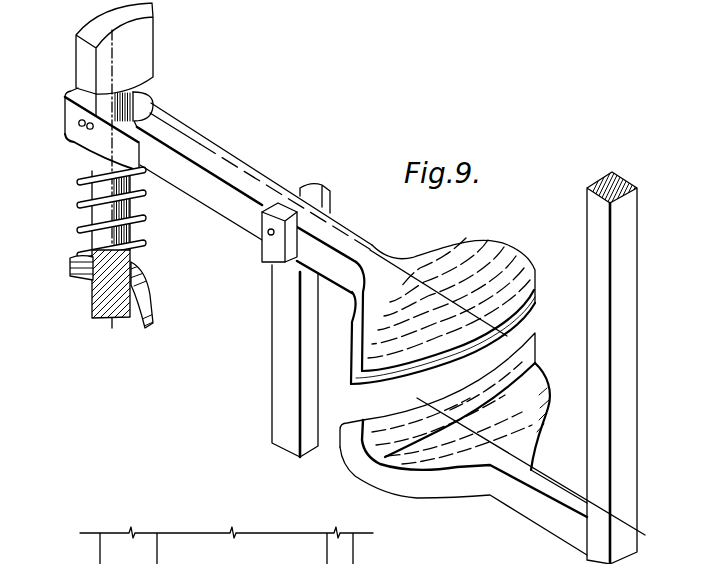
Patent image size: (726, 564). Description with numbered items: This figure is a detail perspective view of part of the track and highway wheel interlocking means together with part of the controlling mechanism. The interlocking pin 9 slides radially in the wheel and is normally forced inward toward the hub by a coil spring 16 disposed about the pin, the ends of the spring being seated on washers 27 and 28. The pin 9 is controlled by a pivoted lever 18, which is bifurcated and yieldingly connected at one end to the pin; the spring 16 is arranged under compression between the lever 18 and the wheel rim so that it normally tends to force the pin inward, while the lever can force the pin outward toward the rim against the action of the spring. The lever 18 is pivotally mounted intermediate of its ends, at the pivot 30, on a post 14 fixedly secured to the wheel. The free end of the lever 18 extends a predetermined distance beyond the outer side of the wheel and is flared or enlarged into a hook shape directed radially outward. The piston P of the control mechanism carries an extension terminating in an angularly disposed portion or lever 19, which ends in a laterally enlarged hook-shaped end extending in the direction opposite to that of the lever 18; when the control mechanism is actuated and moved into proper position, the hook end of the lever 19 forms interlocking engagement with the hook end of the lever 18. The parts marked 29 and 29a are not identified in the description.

The pin 9 is at (155, 37).
The post 14 is at (281, 343).
The coil spring 16 is at (140, 206).
The lever 18 is at (520, 267).
The lever 19 is at (478, 487).
The washer 27 is at (140, 297).
The washer 28 is at (84, 150).
The clamp block 29 is at (67, 132).
The pin 29a is at (76, 123).
The pivot 30 is at (267, 236).
The piston P is at (631, 225).